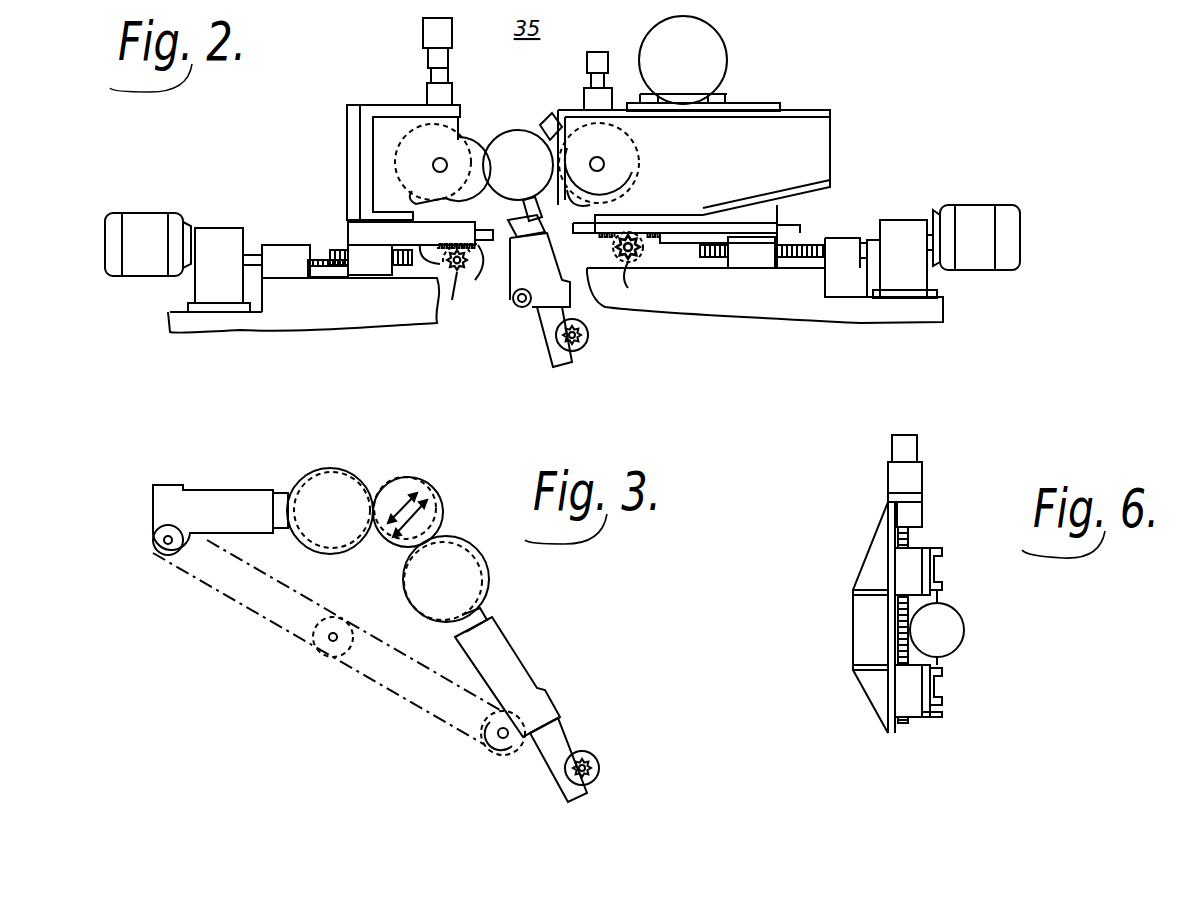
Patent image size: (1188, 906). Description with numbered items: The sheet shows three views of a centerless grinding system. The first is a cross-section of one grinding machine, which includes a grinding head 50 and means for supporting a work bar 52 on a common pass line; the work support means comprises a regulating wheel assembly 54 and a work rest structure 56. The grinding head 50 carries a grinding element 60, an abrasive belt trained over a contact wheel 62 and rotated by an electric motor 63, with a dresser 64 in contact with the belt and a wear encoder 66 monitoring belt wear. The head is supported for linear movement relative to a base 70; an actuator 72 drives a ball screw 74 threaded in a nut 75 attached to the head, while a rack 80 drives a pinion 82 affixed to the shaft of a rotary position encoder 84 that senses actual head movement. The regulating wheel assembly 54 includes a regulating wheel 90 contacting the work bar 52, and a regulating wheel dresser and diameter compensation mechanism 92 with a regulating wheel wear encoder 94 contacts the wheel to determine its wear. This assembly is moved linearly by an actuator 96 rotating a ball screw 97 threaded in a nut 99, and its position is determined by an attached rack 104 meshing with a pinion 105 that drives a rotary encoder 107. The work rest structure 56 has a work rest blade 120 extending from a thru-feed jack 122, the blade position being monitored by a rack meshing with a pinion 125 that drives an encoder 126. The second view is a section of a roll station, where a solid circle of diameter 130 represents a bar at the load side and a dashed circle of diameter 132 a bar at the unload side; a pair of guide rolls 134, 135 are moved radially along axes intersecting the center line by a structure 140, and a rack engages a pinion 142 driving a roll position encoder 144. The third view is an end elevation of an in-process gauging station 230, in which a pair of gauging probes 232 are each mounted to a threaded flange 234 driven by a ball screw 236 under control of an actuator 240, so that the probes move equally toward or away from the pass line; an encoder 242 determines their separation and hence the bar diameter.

In FIG. 2, the grinding head 50 is at (694, 189).
In FIG. 2, the work bar 52 is at (518, 165).
In FIG. 3, the work bar 52 is at (400, 477).
In FIG. 6, the work bar 52 is at (937, 631).
In FIG. 2, the regulating wheel assembly 54 is at (345, 138).
In FIG. 2, the work rest structure 56 is at (516, 313).
In FIG. 2, the grinding element 60 is at (598, 210).
In FIG. 2, the contact wheel 62 is at (636, 141).
In FIG. 2, the electric motor 63 is at (703, 63).
In FIG. 2, the dresser 64 is at (590, 96).
In FIG. 2, the wear encoder 66 is at (548, 128).
In FIG. 2, the base 70 is at (352, 316).
In FIG. 2, the actuator 72 is at (970, 218).
In FIG. 2, the ball screw 74 is at (808, 246).
In FIG. 2, the nut 75 is at (750, 258).
In FIG. 2, the rack 80 is at (652, 232).
In FIG. 2, the pinion 82 is at (612, 249).
In FIG. 2, the rotary position encoder 84 is at (639, 283).
In FIG. 2, the regulating wheel 90 is at (435, 167).
In FIG. 2, the regulating wheel dresser and diameter compensation mechanism 92 is at (425, 93).
In FIG. 2, the regulating wheel wear encoder 94 is at (422, 33).
In FIG. 2, the actuator 96 is at (150, 222).
In FIG. 2, the ball screw 97 is at (333, 265).
In FIG. 2, the nut 99 is at (380, 275).
In FIG. 2, the rack 104 is at (461, 270).
In FIG. 2, the pinion 105 is at (464, 297).
In FIG. 2, the rotary encoder 107 is at (420, 233).
In FIG. 2, the work rest blade 120 is at (520, 211).
In FIG. 2, the thru-feed jack 122 is at (539, 261).
In FIG. 2, the pinion 125 is at (578, 352).
In FIG. 2, the encoder 126 is at (589, 336).
In FIG. 3, the diameter 130 is at (421, 491).
In FIG. 3, the diameter 132 is at (433, 512).
In FIG. 3, the guide roll 134 is at (358, 548).
In FIG. 3, the guide roll 135 is at (425, 588).
In FIG. 3, the structure 140 is at (270, 624).
In FIG. 3, the pinion 142 is at (590, 755).
In FIG. 3, the roll position encoder 144 is at (599, 769).
In FIG. 6, the in-process gauging station 230 is at (974, 571).
In FIG. 6, the gauging probe 232 is at (941, 573).
In FIG. 6, the threaded flange 234 is at (905, 565).
In FIG. 6, the ball screw 236 is at (898, 630).
In FIG. 6, the actuator 240 is at (897, 478).
In FIG. 6, the encoder 242 is at (892, 441).